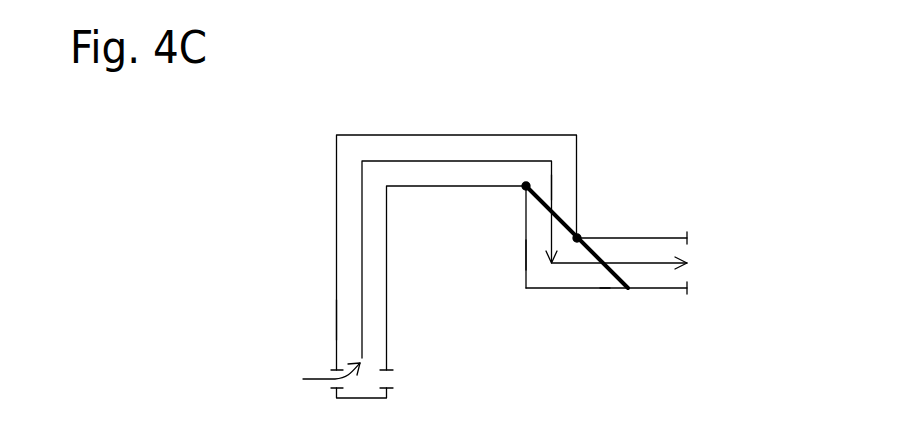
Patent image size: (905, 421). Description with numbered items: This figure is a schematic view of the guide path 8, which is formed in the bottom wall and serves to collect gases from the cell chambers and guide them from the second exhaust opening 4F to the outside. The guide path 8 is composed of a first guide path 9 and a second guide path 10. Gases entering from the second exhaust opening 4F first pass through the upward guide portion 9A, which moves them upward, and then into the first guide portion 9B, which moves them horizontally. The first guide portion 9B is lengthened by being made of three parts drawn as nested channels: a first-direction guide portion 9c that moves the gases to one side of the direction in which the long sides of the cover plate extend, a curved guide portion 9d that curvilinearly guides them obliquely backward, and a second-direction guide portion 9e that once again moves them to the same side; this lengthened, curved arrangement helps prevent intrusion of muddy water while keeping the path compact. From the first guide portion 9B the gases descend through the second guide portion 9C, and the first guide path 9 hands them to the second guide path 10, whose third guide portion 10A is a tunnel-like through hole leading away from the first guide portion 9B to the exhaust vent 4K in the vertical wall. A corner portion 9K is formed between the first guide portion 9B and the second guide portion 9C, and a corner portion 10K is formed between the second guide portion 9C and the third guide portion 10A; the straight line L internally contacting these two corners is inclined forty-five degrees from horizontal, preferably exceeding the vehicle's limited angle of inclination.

The first guide portion 9B is at (463, 63).
The first-direction guide portion 9c is at (357, 135).
The curved guide portion 9d is at (444, 135).
The second-direction guide portion 9e is at (521, 135).
The upward guide portion 9A is at (337, 303).
The second guide portion 9C is at (526, 252).
The corner portion 9K is at (526, 184).
The straight line L is at (543, 200).
The corner portion 10K is at (577, 241).
The guide path 8 is at (693, 112).
The first guide path 9 is at (552, 188).
The second guide path 10 is at (627, 262).
The third guide portion 10A is at (658, 238).
The exhaust vent 4K is at (689, 288).
The second exhaust opening 4F is at (327, 382).